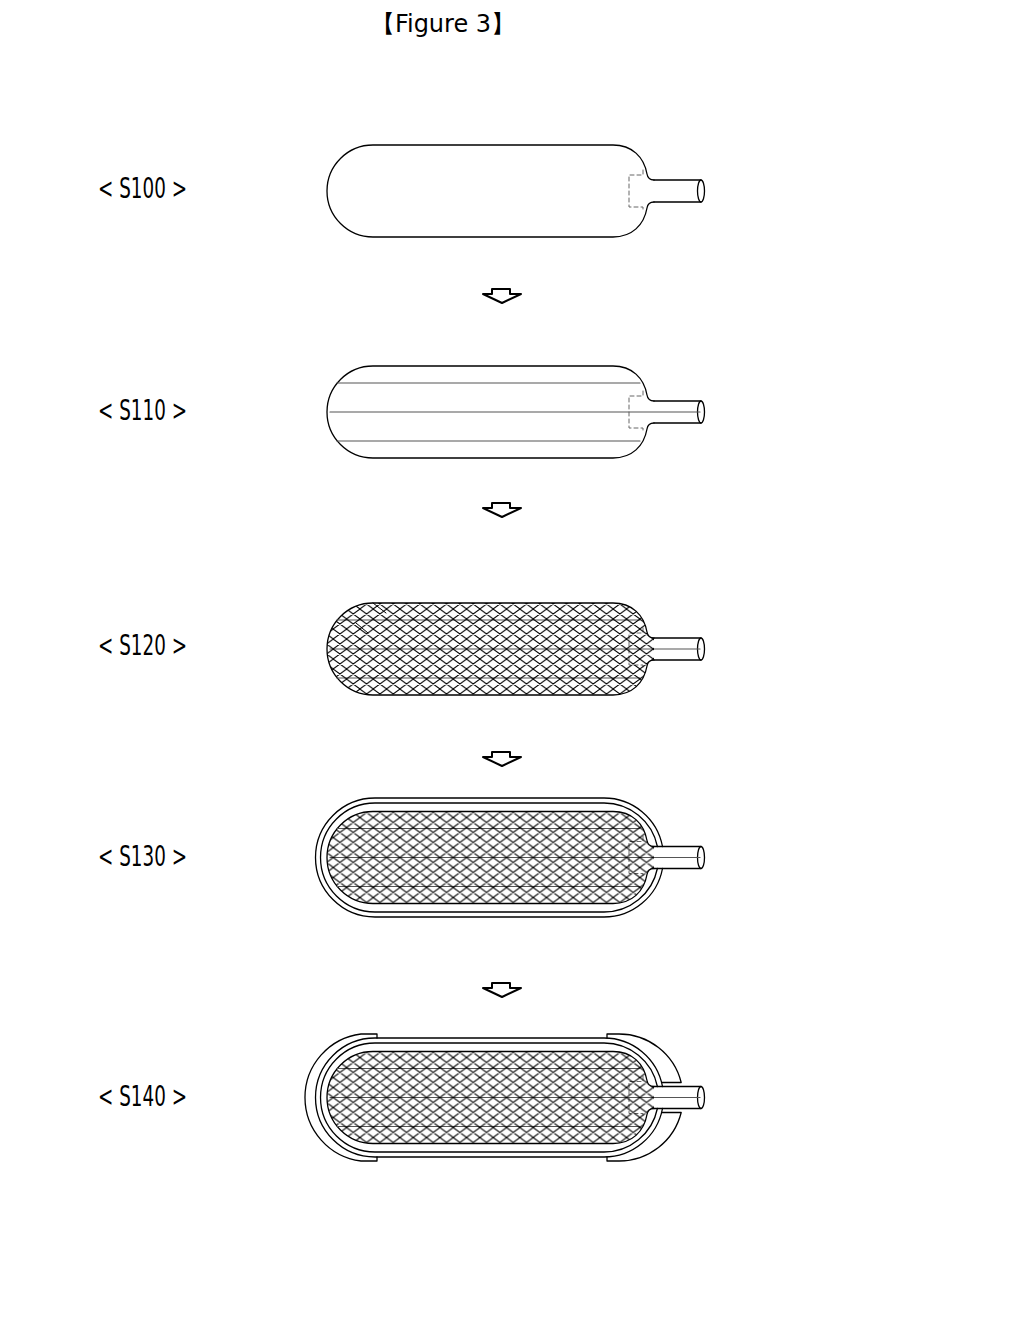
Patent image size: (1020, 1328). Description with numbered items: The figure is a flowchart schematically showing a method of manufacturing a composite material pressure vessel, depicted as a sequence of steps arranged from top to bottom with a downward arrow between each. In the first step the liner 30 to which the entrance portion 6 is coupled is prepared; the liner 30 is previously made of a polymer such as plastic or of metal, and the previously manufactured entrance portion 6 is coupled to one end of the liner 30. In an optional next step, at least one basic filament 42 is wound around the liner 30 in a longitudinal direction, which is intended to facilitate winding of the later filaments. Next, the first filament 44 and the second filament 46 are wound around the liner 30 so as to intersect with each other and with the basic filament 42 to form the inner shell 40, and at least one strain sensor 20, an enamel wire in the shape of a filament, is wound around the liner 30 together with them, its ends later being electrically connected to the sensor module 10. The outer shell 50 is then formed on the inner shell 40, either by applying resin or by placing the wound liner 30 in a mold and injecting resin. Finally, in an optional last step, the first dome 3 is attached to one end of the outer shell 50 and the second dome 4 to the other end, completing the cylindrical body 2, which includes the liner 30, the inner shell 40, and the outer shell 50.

The body 2 is at (553, 1166).
The first dome 3 is at (665, 1134).
The second dome 4 is at (318, 1142).
The entrance portion 6 is at (678, 172).
The sensor module 10 is at (713, 637).
The strain sensor 20 is at (530, 603).
The liner 30 is at (618, 246).
The inner shell 40 is at (583, 906).
The basic filament 42 is at (428, 382).
The first filament 44 is at (379, 604).
The second filament 46 is at (362, 630).
The outer shell 50 is at (545, 917).